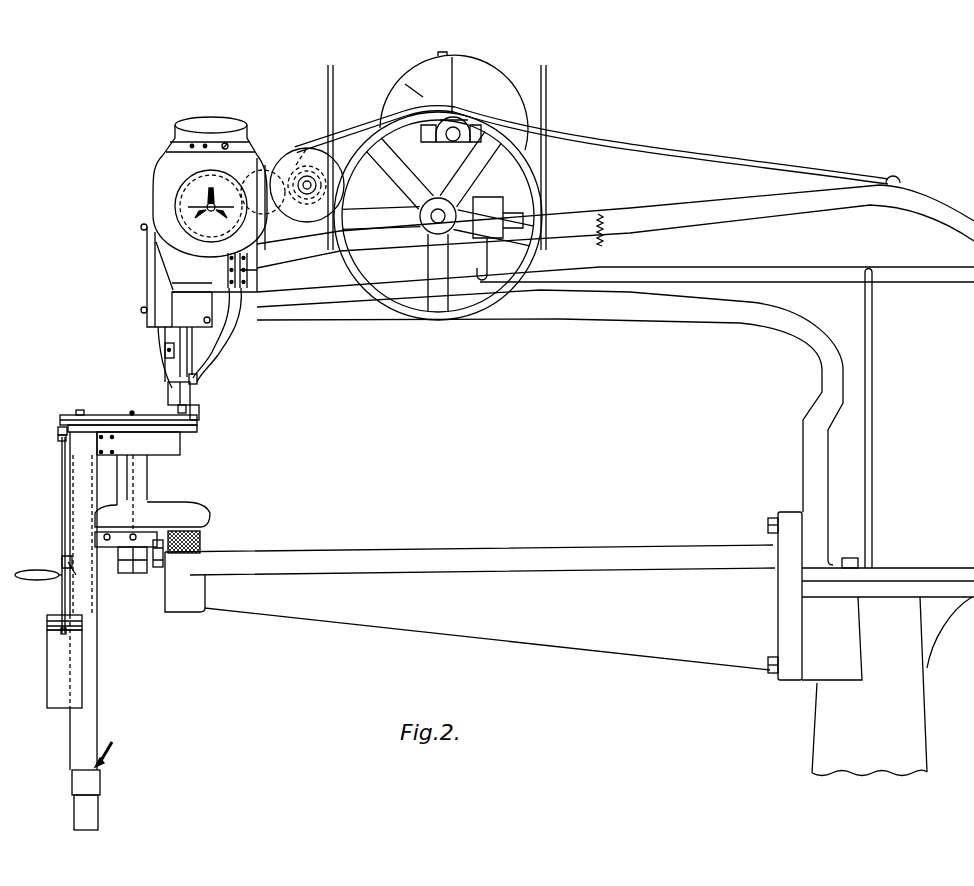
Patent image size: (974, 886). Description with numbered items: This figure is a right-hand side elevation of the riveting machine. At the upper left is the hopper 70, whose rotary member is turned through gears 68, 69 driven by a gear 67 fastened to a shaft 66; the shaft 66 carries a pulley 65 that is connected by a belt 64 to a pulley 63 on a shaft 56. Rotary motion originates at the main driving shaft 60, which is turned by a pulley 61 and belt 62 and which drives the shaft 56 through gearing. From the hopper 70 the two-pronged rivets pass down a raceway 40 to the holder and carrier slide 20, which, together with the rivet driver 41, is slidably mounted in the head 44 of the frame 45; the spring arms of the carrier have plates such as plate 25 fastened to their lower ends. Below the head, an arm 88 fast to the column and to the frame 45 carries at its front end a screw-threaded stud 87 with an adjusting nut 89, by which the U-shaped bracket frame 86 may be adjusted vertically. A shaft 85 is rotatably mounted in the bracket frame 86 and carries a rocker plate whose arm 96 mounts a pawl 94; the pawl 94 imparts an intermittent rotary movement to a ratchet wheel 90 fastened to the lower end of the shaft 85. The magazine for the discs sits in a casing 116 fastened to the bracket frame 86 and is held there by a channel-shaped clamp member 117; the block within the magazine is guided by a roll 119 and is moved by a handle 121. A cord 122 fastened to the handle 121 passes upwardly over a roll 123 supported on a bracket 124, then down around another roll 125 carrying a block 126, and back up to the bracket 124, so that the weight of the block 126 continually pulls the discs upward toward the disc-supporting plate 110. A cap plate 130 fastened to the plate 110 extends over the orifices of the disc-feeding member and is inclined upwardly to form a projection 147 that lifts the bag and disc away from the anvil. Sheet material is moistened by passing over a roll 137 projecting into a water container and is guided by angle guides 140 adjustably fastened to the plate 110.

The holder and carrier slide 20 is at (162, 337).
The plate 25 is at (190, 395).
The raceway 40 is at (216, 349).
The rivet driver 41 is at (180, 359).
The head 44 is at (157, 284).
The frame 45 is at (620, 305).
The shaft 56 is at (458, 130).
The main driving shaft 60 is at (434, 225).
The pulley 61 is at (534, 177).
The belt 62 is at (547, 118).
The pulley 63 is at (458, 116).
The belt 64 is at (357, 129).
The pulley 65 is at (304, 153).
The shaft 66 is at (311, 189).
The gear 67 is at (296, 164).
The gear 68 is at (281, 153).
The gear 69 is at (186, 186).
The hopper 70 is at (168, 194).
The shaft 85 is at (133, 462).
The U-shaped bracket frame 86 is at (152, 512).
The screw-threaded stud 87 is at (190, 527).
The arm 88 is at (190, 604).
The adjusting nut 89 is at (201, 539).
The ratchet wheel 90 is at (155, 548).
The pawl 94 is at (112, 548).
The arm 96 is at (133, 563).
The disc-supporting plate 110 is at (60, 421).
The casing 116 is at (90, 724).
The channel-shaped clamp member 117 is at (90, 781).
The roll 119 is at (63, 560).
The handle 121 is at (38, 580).
The cord 122 is at (62, 532).
The roll 123 is at (58, 431).
The bracket 124 is at (62, 442).
The roll 125 is at (72, 632).
The block 126 is at (65, 673).
The cap plate 130 is at (80, 412).
The roll 137 is at (180, 411).
The angle guides 140 is at (131, 411).
The projection 147 is at (199, 413).